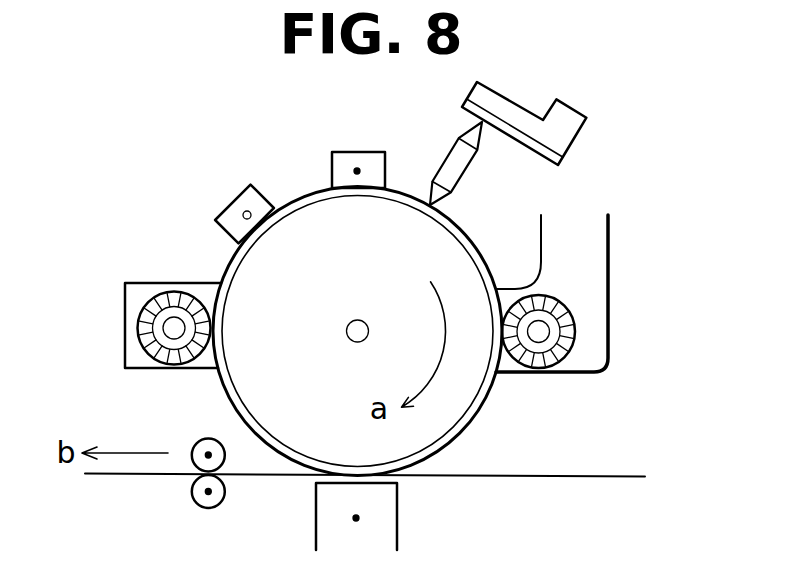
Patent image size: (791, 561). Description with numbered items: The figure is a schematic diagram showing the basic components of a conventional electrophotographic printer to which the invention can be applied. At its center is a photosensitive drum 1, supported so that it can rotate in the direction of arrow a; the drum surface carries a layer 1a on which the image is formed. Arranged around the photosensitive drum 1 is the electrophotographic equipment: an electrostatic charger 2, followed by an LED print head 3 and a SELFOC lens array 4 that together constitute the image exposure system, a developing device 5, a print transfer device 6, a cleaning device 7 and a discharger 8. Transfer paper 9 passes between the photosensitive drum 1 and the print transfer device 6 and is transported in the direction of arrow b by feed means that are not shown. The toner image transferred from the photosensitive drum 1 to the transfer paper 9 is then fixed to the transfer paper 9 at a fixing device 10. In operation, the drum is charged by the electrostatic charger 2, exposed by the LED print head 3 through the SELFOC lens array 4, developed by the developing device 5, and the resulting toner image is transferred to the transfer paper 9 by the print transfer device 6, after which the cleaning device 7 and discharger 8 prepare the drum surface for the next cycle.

The photosensitive drum 1 is at (462, 387).
The photosensitive layer 1a is at (460, 433).
The electrostatic charger 2 is at (342, 152).
The LED print head 3 is at (503, 108).
The SELFOC lens array 4 is at (447, 158).
The developing device 5 is at (595, 262).
The print transfer device 6 is at (400, 530).
The cleaning device 7 is at (125, 305).
The discharger 8 is at (228, 207).
The transfer paper 9 is at (105, 475).
The fixing device 10 is at (196, 503).